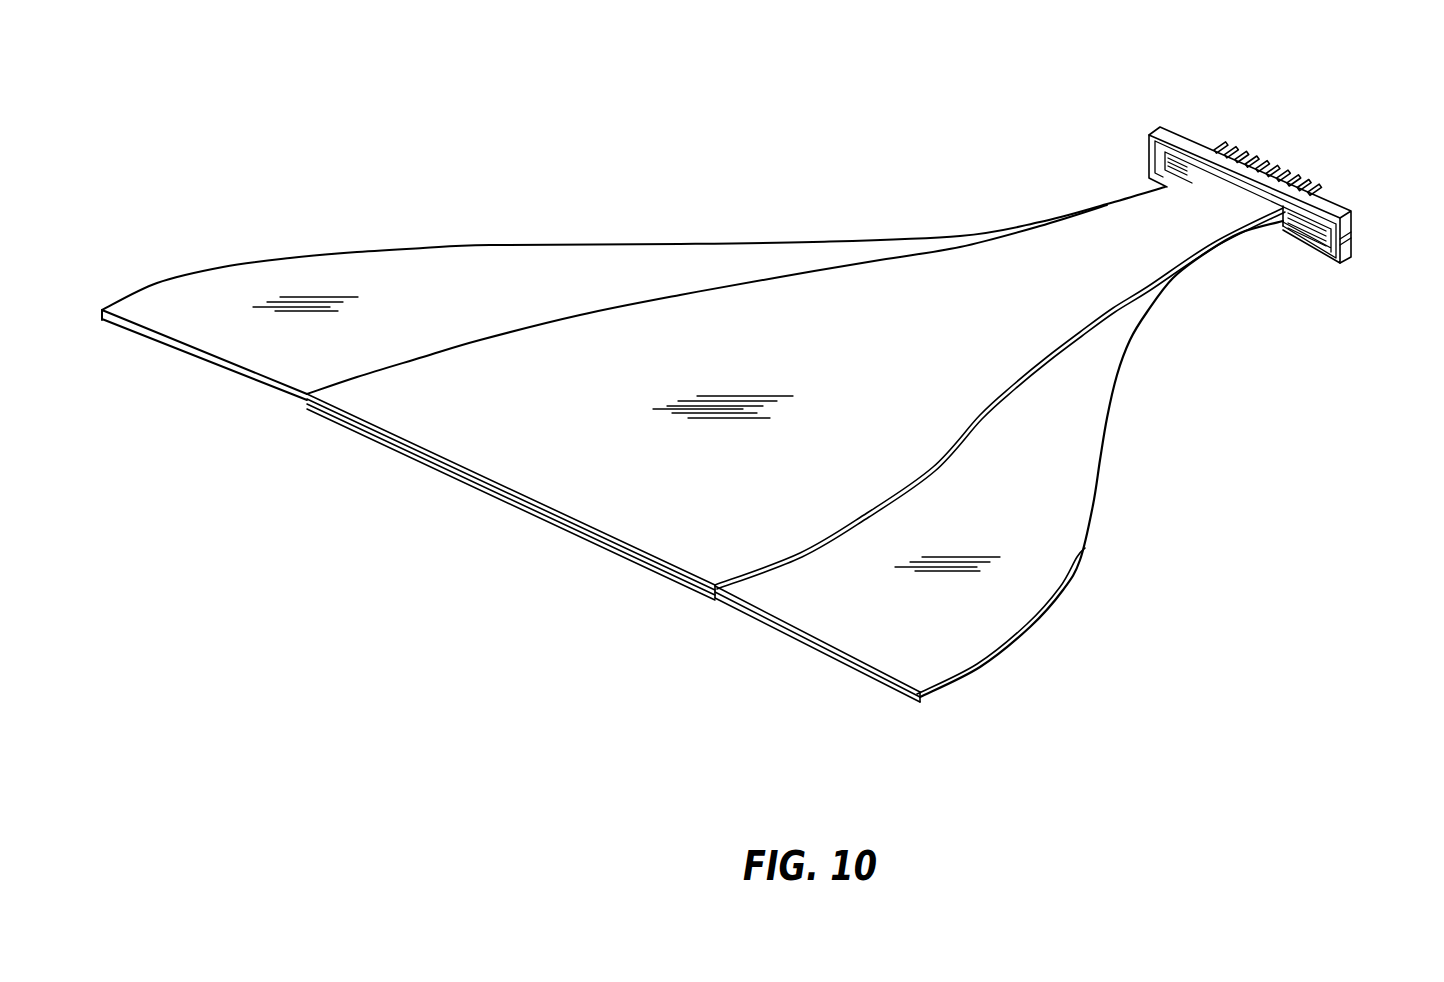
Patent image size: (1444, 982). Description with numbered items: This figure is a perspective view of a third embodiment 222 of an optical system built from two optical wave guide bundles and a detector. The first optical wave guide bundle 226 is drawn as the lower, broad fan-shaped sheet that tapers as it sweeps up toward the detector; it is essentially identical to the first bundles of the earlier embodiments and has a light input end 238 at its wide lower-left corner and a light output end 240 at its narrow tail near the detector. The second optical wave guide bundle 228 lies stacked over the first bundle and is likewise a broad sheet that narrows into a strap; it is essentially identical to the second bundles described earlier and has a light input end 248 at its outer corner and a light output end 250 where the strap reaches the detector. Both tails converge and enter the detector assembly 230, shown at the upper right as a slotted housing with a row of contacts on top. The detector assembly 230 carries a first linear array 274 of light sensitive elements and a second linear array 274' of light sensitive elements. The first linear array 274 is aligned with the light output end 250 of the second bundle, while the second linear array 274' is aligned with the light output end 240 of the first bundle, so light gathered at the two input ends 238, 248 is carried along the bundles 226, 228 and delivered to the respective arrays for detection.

The third embodiment of optical system 222 is at (763, 383).
The first optical wave guide bundle 226 is at (1090, 544).
The second optical wave guide bundle 228 is at (950, 455).
The detector assembly 230 is at (1148, 137).
The light input end 238 is at (922, 700).
The light output end 240 is at (1231, 243).
The light input end 248 is at (721, 593).
The light output end 250 is at (1140, 197).
The first linear array 274 is at (1356, 203).
The second linear array 274' is at (1349, 270).